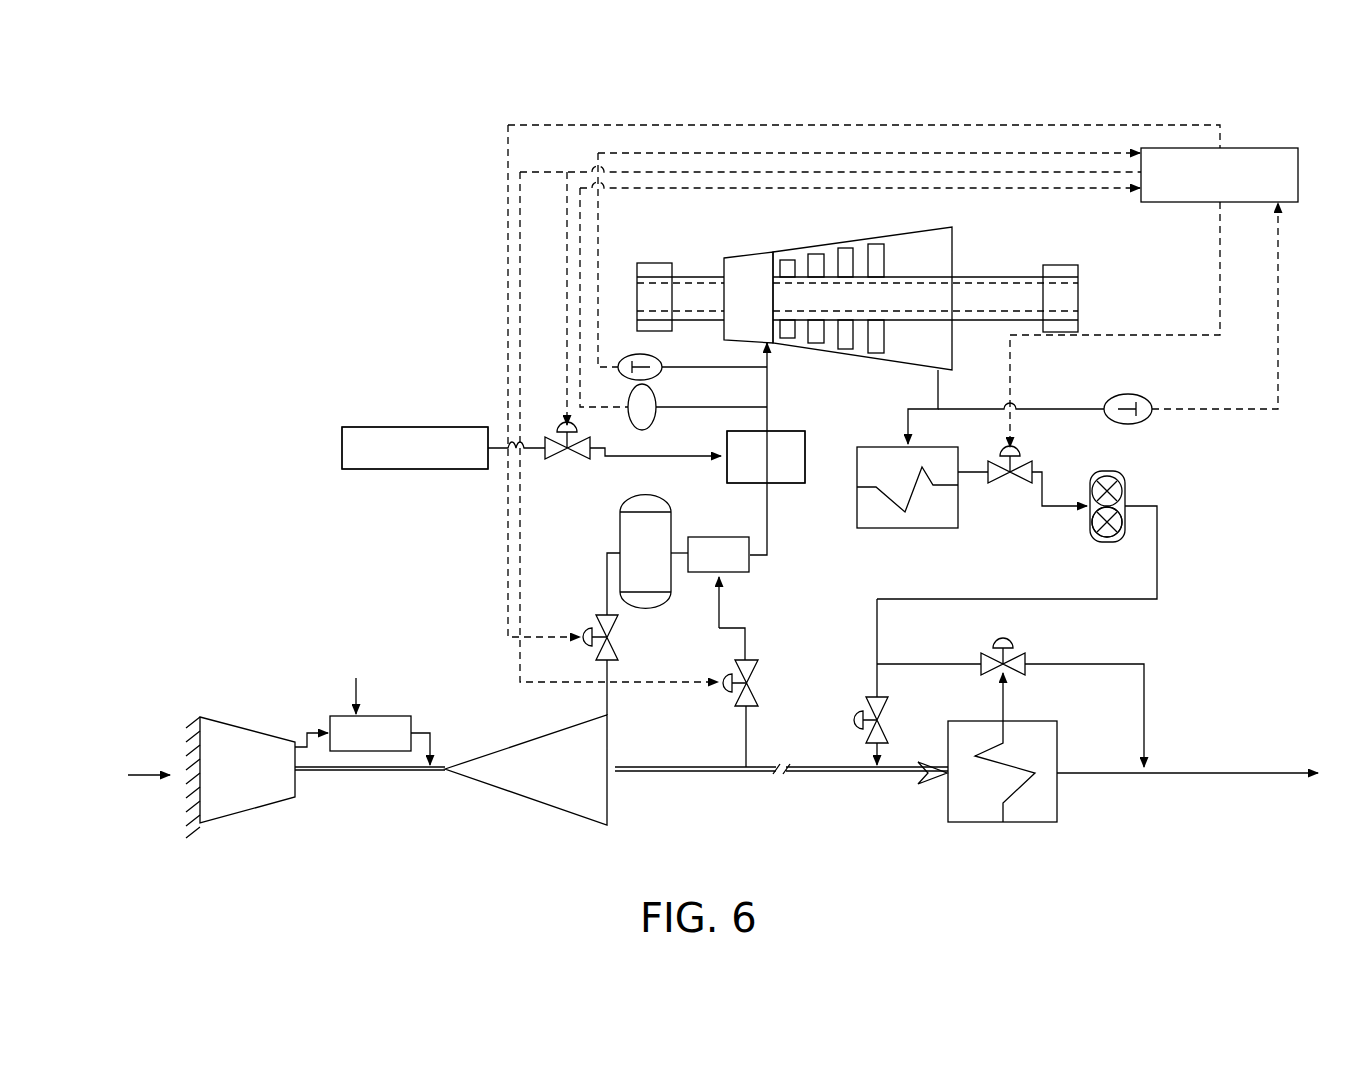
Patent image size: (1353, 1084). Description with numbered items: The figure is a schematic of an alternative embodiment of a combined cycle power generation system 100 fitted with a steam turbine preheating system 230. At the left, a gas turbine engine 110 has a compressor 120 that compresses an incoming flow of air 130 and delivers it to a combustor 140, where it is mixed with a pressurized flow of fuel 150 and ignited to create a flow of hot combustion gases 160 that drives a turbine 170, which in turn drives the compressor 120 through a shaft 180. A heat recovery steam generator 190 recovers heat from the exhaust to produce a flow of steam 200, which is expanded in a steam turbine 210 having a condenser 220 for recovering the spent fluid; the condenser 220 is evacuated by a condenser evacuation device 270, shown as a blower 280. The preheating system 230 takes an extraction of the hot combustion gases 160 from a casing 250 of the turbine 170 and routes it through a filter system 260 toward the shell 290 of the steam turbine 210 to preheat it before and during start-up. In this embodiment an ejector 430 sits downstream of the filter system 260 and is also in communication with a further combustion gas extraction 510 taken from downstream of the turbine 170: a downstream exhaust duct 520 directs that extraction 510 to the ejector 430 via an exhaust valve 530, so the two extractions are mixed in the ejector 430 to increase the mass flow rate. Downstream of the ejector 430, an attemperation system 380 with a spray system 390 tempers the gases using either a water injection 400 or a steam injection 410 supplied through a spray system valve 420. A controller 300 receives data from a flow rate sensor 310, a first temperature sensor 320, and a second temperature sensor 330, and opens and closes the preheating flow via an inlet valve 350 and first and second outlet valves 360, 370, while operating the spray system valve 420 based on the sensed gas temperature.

The combined cycle power generation system 100 is at (257, 184).
The gas turbine engine 110 is at (236, 720).
The compressor 120 is at (226, 815).
The flow of air 130 is at (150, 774).
The combustor 140 is at (375, 716).
The flow of fuel 150 is at (355, 693).
The flow of combustion gases 160 is at (432, 740).
The turbine 170 is at (585, 820).
The shaft 180 is at (383, 773).
The heat recovery steam generator 190 is at (1057, 743).
The flow of steam 200 is at (1003, 718).
The steam turbine 210 is at (923, 232).
The condenser 220 is at (913, 528).
The steam turbine preheating system 230 is at (605, 549).
The casing 250 is at (610, 738).
The filter system 260 is at (672, 518).
The condenser evacuation device 270 is at (1129, 479).
The blower 280 is at (1091, 518).
The shell 290 is at (740, 258).
The controller 300 is at (1222, 148).
The flow rate sensor 310 is at (658, 394).
The first temperature sensor 320 is at (662, 355).
The second temperature sensor 330 is at (1130, 395).
The inlet valve 350 is at (590, 627).
The first outlet valve 360 is at (858, 720).
The second outlet valve 370 is at (1003, 643).
The attemperation system 380 is at (789, 425).
The spray system 390 is at (780, 483).
The water injection 400 is at (415, 427).
The steam injection 410 is at (415, 448).
The spray system valve 420 is at (576, 431).
The ejector 430 is at (752, 558).
The further combustion gas extraction 510 is at (746, 750).
The downstream exhaust duct 520 is at (660, 773).
The exhaust valve 530 is at (730, 672).